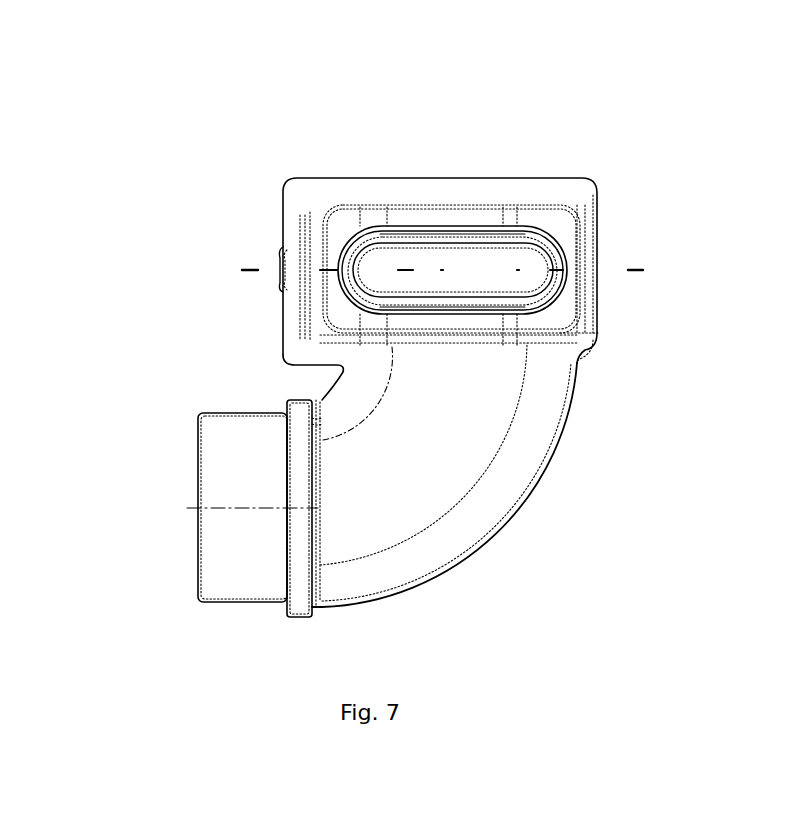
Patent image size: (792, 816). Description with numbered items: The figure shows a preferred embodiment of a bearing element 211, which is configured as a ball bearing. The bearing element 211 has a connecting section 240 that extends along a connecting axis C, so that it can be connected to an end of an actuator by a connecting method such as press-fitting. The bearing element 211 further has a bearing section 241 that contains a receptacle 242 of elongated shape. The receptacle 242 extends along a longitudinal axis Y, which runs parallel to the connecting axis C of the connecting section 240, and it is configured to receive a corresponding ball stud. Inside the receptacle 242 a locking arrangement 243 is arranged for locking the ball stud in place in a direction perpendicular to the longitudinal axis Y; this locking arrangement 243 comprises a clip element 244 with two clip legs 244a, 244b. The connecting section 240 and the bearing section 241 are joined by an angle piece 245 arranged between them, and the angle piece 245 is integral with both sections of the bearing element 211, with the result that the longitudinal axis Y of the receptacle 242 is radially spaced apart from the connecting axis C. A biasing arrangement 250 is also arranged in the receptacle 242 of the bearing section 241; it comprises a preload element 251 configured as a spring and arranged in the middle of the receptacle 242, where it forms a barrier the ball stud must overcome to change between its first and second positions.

The bearing element 211 is at (618, 214).
The connecting section 240 is at (242, 598).
The bearing section 241 is at (420, 182).
The receptacle 242 is at (358, 265).
The locking arrangement 243 is at (447, 212).
The clip element 244 is at (462, 310).
The clip leg 244a is at (528, 241).
The clip leg 244b is at (522, 303).
The angle piece 245 is at (502, 488).
The biasing arrangement 250 is at (479, 265).
The preload element 251 is at (455, 306).
The connecting axis C is at (222, 508).
The longitudinal axis Y is at (250, 270).